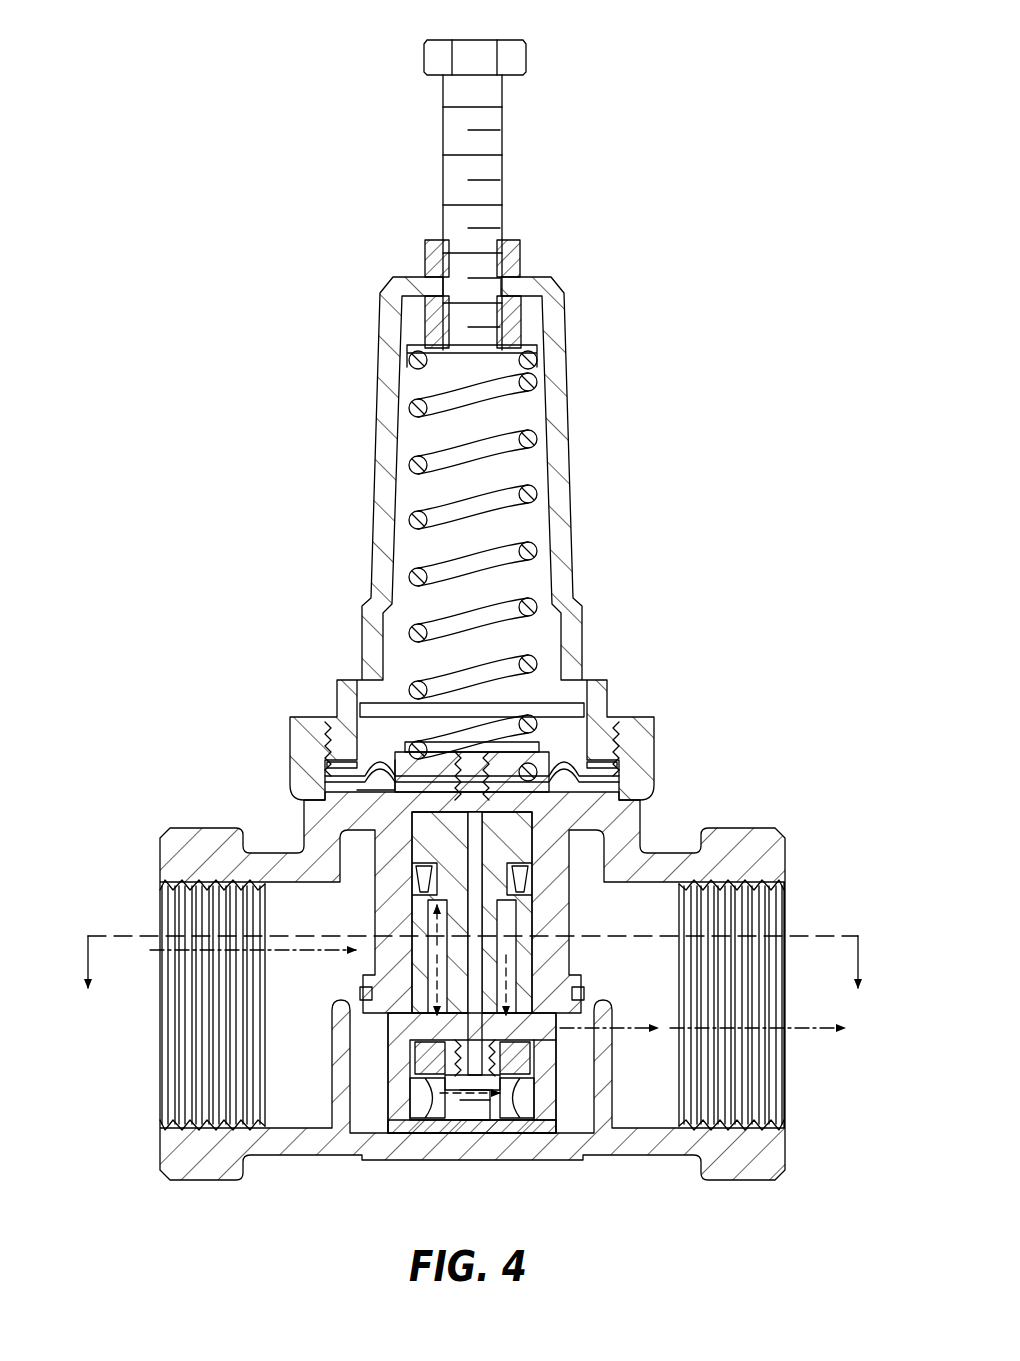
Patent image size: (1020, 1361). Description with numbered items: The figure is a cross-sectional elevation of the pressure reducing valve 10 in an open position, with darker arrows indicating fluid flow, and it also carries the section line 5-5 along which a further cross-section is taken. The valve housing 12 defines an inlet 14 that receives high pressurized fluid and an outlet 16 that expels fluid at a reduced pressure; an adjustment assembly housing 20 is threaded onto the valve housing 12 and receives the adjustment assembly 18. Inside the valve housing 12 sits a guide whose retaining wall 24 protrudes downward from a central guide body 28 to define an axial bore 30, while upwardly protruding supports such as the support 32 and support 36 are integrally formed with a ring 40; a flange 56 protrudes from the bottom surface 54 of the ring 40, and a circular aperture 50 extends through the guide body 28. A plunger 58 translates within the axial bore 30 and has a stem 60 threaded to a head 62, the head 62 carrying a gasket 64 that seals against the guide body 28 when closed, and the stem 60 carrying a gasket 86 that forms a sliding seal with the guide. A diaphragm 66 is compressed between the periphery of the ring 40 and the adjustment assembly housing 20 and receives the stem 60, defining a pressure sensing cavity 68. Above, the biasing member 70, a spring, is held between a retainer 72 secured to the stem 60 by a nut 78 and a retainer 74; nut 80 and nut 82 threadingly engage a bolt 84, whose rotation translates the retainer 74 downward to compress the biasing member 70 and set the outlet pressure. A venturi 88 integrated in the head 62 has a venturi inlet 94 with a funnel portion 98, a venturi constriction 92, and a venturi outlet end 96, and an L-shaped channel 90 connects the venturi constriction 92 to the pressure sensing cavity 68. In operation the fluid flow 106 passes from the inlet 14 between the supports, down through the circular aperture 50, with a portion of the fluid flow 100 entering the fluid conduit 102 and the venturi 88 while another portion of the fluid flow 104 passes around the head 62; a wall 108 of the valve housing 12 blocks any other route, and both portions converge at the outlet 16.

The pressure reducing valve 10 is at (236, 190).
The valve housing 12 is at (288, 1145).
The inlet 14 is at (120, 1060).
The outlet 16 is at (824, 1074).
The adjustment assembly 18 is at (550, 460).
The adjustment assembly housing 20 is at (575, 500).
The retaining wall 24 is at (392, 1145).
The guide body 28 is at (625, 1002).
The axial bore 30 is at (440, 1135).
The support 32 is at (382, 888).
The support 36 is at (672, 943).
The ring 40 is at (525, 870).
The circular aperture 50 is at (540, 1050).
The bottom surface 54 is at (390, 945).
The flange 56 is at (655, 855).
The plunger 58 is at (462, 893).
The stem 60 is at (432, 880).
The head 62 is at (517, 1124).
The gasket 64 is at (417, 1027).
The diaphragm 66 is at (620, 778).
The pressure sensing cavity 68 is at (413, 805).
The biasing member 70 is at (445, 455).
The retainer 72 is at (548, 762).
The retainer 74 is at (540, 357).
The nut 78 is at (447, 745).
The nut 80 is at (512, 324).
The nut 82 is at (433, 252).
The bolt 84 is at (490, 118).
The gasket 86 is at (533, 860).
The venturi 88 is at (482, 1100).
The channel 90 is at (583, 808).
The venturi constriction 92 is at (470, 1103).
The venturi inlet 94 is at (427, 1093).
The venturi outlet end 96 is at (538, 1095).
The funnel portion 98 is at (417, 1053).
The portion of the fluid flow 100 is at (493, 1120).
The fluid conduit 102 is at (427, 1033).
The portion of the fluid flow 104 is at (593, 1027).
The fluid flow 106 is at (600, 1033).
The wall 108 is at (617, 878).
The section line 5- 5 is at (473, 981).